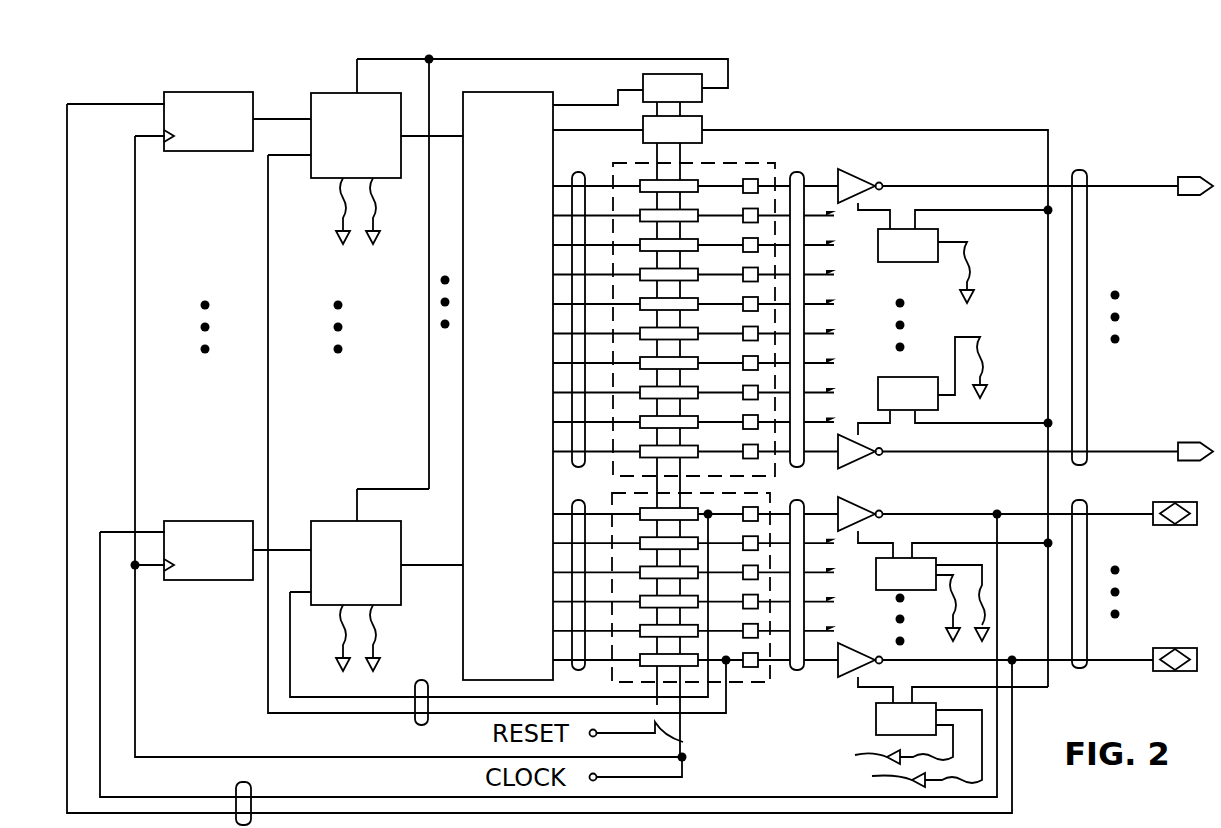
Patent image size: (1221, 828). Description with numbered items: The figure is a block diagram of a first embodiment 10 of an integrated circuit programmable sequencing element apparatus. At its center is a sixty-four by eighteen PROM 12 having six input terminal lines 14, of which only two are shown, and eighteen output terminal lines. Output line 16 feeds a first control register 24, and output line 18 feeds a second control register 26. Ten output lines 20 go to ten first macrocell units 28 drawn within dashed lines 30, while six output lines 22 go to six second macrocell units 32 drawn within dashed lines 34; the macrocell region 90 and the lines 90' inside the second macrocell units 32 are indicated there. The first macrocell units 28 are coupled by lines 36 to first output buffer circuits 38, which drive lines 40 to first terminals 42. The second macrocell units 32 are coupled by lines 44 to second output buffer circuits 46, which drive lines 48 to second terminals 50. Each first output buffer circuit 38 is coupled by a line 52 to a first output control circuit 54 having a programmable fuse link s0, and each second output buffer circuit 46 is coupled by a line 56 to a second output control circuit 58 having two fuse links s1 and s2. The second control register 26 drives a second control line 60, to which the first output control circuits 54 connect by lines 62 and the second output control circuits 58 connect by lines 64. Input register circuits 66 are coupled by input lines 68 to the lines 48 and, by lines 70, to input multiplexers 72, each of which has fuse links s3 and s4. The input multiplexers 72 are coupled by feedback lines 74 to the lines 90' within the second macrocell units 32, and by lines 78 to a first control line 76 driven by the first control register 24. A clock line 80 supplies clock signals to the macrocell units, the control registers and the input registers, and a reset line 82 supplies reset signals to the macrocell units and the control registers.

The first embodiment 10 is at (1130, 100).
The PROM 12 is at (493, 403).
The input terminal lines 14 is at (415, 140).
The output line 16 is at (600, 105).
The output line 18 is at (600, 134).
The output lines 20 is at (578, 172).
The output lines 22 is at (572, 670).
The first control register 24 is at (728, 80).
The second control register 26 is at (702, 120).
The first macrocell units 28 is at (645, 180).
The dashed lines 30 is at (750, 178).
The second macrocell units 32 is at (755, 682).
The dashed lines 34 is at (733, 700).
The lines 36 is at (800, 170).
The first output buffer circuits 38 is at (860, 170).
The lines 40 is at (1085, 170).
The first terminals 42 is at (1180, 196).
The lines 44 is at (800, 670).
The second output buffer circuits 46 is at (875, 505).
The lines 48 is at (1085, 500).
The second terminals 50 is at (1185, 525).
The line 52 is at (905, 210).
The first output control circuit 54 is at (910, 262).
The line 56 is at (893, 546).
The second output control circuit 58 is at (925, 558).
The second control line 60 is at (985, 130).
The lines 62 is at (975, 210).
The lines 64 is at (985, 513).
The input register circuits 66 is at (212, 151).
The input lines 68 is at (240, 782).
The line 70 is at (285, 118).
The input multiplexers 72 is at (343, 170).
The feedback lines 74 is at (415, 716).
The first control line 76 is at (520, 62).
The lines 78 is at (357, 68).
The clock line 80 is at (245, 757).
The reset line 82 is at (684, 740).
The macrocell block 90 is at (694, 306).
The lines 90' is at (745, 587).